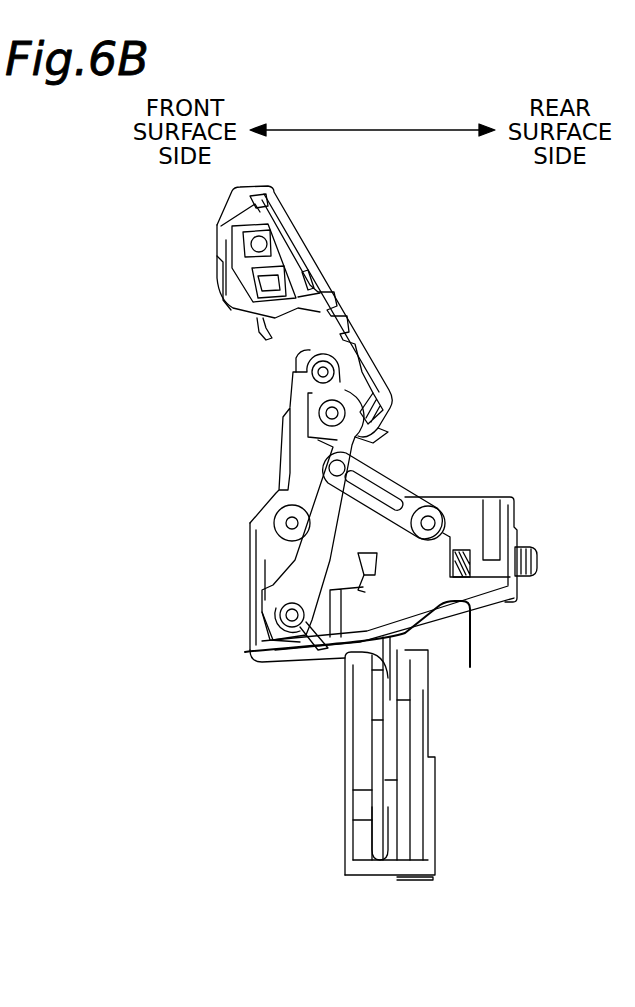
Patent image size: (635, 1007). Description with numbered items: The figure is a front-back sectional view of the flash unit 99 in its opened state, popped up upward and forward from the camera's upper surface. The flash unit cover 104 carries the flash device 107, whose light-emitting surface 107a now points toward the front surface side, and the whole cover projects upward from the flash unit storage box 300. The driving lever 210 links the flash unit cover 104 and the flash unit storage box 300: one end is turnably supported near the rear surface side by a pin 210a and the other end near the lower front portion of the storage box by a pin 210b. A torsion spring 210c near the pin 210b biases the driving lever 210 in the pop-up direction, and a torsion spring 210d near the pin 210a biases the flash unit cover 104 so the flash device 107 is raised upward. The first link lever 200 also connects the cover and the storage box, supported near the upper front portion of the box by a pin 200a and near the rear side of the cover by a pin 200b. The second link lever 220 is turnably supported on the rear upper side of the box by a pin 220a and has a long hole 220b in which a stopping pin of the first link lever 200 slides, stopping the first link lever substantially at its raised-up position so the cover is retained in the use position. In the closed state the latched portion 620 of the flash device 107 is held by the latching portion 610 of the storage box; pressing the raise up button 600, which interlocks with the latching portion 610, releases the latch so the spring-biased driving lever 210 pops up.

The flash unit 99 is at (512, 329).
The flash unit cover 104 is at (305, 232).
The flash device 107 is at (227, 245).
The light-emitting surface 107a is at (216, 258).
The latched portion 620 is at (261, 328).
The first link lever 200 is at (298, 446).
The pin 200a is at (292, 523).
The pin 200b is at (330, 368).
The driving lever 210 is at (310, 567).
The pin 210a is at (335, 412).
The pin 210b is at (292, 628).
The torsion spring 210c is at (275, 618).
The torsion spring 210d is at (386, 440).
The second link lever 220 is at (414, 484).
The pin 220a is at (428, 523).
The long hole 220b is at (370, 477).
The flash unit storage box 300 is at (253, 653).
The raise up button 600 is at (535, 550).
The latching portion 610 is at (378, 568).